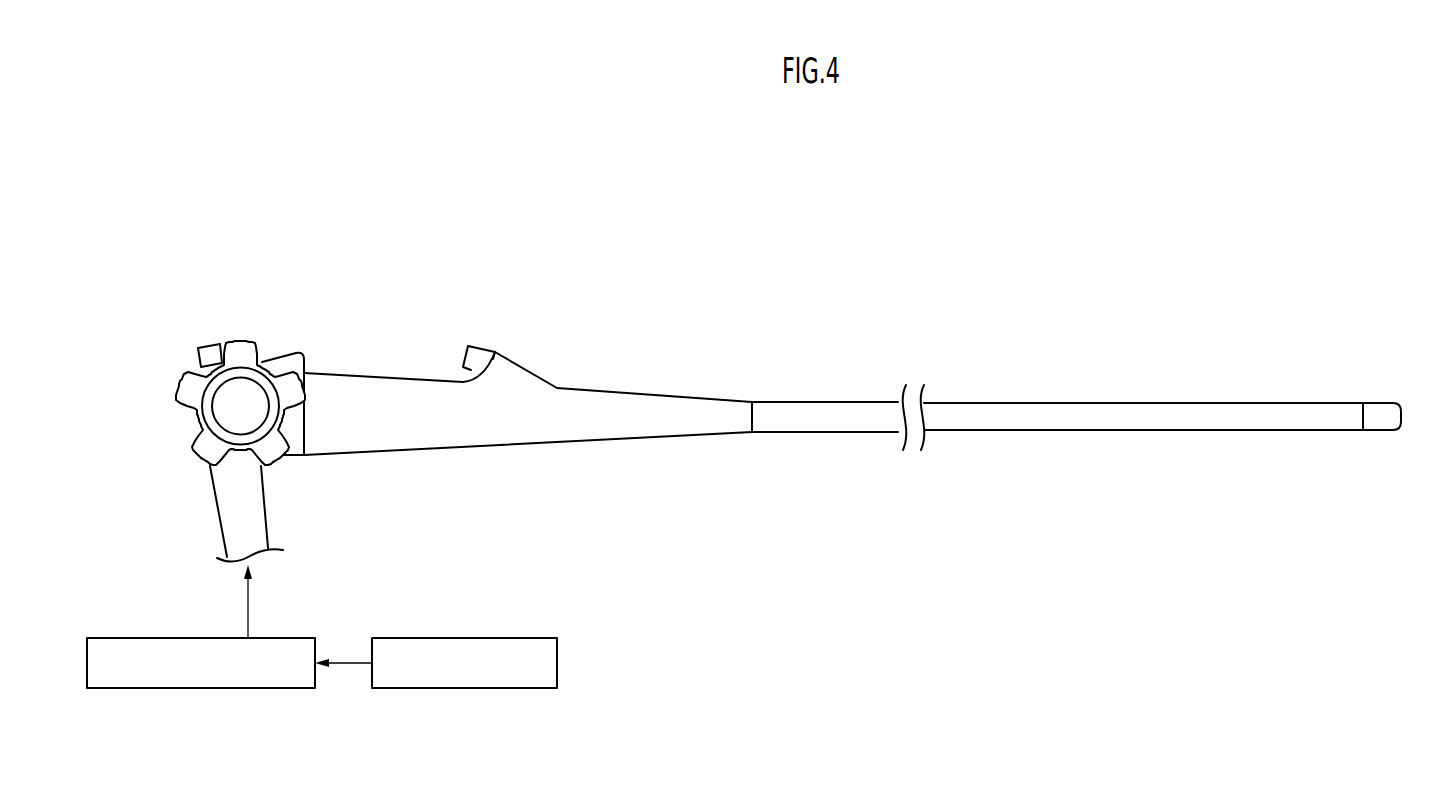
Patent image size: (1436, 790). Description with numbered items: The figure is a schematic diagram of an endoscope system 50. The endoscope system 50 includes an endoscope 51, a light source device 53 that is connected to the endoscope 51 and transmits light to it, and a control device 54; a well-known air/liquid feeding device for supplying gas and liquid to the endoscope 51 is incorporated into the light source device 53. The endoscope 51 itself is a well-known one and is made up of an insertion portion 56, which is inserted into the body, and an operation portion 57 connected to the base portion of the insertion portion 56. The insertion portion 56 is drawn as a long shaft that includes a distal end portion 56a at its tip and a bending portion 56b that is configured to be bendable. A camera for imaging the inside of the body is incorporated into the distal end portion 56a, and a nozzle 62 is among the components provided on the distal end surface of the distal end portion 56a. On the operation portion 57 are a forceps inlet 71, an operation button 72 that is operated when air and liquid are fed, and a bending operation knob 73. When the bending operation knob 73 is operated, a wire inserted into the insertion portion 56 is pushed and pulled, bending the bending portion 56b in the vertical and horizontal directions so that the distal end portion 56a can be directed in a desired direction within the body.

The endoscope system 50 is at (396, 228).
The endoscope 51 is at (749, 352).
The light source device 53 is at (203, 637).
The control device 54 is at (432, 637).
The insertion portion 56 is at (1124, 386).
The distal end portion 56a is at (1386, 422).
The bending portion 56b is at (1295, 425).
The operation portion 57 is at (400, 437).
The nozzle 62 is at (1403, 420).
The forceps inlet 71 is at (466, 351).
The operation button 72 is at (215, 348).
The bending operation knob 73 is at (273, 456).